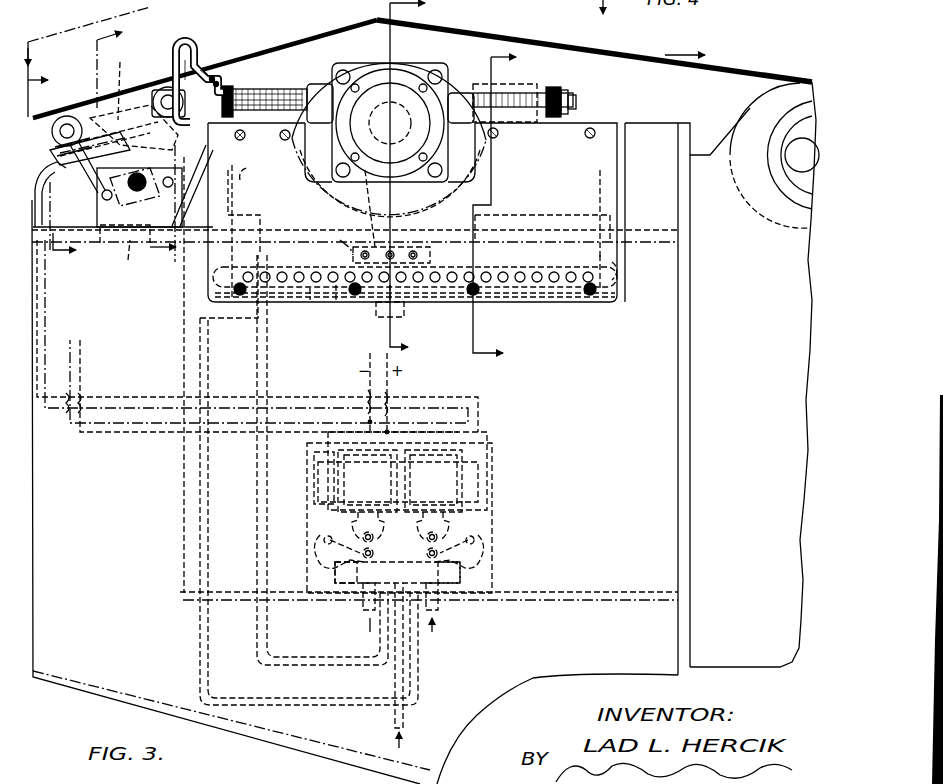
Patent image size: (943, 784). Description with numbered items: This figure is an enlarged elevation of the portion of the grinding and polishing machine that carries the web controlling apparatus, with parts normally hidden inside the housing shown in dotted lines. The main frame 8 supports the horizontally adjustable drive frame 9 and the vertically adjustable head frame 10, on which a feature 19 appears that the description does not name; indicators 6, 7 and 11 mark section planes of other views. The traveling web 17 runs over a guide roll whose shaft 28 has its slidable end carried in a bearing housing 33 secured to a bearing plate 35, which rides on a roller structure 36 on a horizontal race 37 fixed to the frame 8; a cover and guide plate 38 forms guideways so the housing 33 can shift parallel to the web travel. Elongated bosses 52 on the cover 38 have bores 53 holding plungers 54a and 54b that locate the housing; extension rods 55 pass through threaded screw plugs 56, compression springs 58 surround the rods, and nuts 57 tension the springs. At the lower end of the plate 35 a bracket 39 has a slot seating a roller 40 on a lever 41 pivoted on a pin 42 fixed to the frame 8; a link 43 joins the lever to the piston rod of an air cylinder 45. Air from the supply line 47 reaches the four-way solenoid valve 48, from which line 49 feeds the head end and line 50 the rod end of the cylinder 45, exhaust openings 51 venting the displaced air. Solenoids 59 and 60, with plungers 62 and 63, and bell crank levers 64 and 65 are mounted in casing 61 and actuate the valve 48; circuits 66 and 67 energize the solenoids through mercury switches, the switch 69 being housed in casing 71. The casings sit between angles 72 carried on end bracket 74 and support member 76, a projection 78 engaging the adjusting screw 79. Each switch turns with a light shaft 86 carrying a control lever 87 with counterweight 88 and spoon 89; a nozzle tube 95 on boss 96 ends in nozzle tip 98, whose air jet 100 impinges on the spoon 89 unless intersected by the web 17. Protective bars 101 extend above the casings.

The section line 6- 6 is at (87, 62).
The section line 7- 7 is at (60, 163).
The main frame 8 is at (690, 440).
The drive frame 9 is at (503, 205).
The head frame 10 is at (708, 152).
The section line 11- 11 is at (126, 150).
The web 17 is at (624, 58).
The bearing boss 19 is at (792, 88).
The shaft 28 is at (387, 153).
The bearing housing 33 is at (400, 75).
The bearing plate 35 is at (240, 178).
The roller structure 36 is at (500, 278).
The race 37 is at (540, 285).
The cover and guide plate 38 is at (600, 300).
The bracket 39 is at (432, 256).
The roller 40 is at (362, 232).
The lever 41 is at (420, 292).
The pin 42 is at (384, 318).
The link 43 is at (320, 303).
The fluid actuated cylinder 45 is at (220, 318).
The air supply line 47 is at (405, 710).
The four way solenoid actuated air valve 48 is at (397, 547).
The line 49 is at (208, 495).
The line 50 is at (322, 485).
The air exhaust openings 51 is at (362, 612).
The elongated bosses 52 is at (268, 88).
The bores 53 is at (272, 90).
The plunger 54a is at (318, 84).
The plunger 54b is at (462, 92).
The plunger extension rods 55 is at (576, 106).
The threaded adjustable screw plugs 56 is at (238, 86).
The nuts 57 is at (568, 96).
The compression springs 58 is at (240, 150).
The solenoid 59 is at (314, 470).
The solenoid 60 is at (470, 475).
The casing 61 is at (498, 497).
The plunger 62 is at (348, 522).
The plunger 63 is at (470, 525).
The bell crank lever 64 is at (322, 556).
The bell crank lever 65 is at (480, 556).
The circuit 66 is at (155, 440).
The circuit 67 is at (42, 272).
The mercury switch 69 is at (145, 87).
The casing 71 is at (86, 128).
The angles 72 is at (134, 183).
The end bracket 74 is at (108, 160).
The support member 76 is at (129, 262).
The projection 78 is at (120, 222).
The screw member 79 is at (140, 190).
The light shaft 86 is at (110, 125).
The light control lever 87 is at (52, 160).
The counterweight 88 is at (60, 160).
The spoon 89 is at (224, 86).
The nozzle tube 95 is at (184, 40).
The boss 96 is at (241, 178).
The nozzle tip 98 is at (203, 55).
The jet of air 100 is at (215, 70).
The bars 101 is at (64, 114).